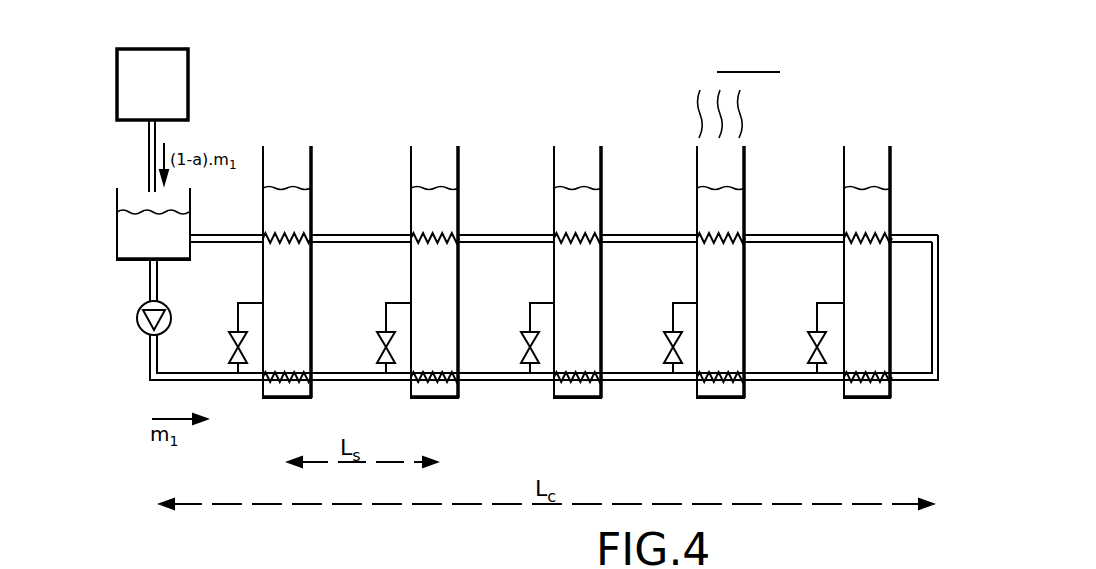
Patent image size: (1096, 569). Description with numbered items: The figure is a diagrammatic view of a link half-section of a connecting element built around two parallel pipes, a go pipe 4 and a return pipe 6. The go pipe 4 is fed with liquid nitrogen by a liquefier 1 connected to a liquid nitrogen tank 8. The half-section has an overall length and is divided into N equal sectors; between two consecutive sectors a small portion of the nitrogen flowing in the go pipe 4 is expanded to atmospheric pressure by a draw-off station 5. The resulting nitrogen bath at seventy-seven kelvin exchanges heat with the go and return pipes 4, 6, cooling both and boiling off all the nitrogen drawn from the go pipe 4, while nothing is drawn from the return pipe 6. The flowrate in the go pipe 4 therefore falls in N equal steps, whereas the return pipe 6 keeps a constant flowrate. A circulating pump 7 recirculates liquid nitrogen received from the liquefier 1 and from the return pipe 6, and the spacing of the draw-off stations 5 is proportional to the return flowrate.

The liquefier 1 is at (191, 80).
The go pipe 4 is at (205, 382).
The draw-off station 5 is at (313, 389).
The return pipe 6 is at (640, 234).
The circulating pump 7 is at (171, 312).
The liquid nitrogen tank 8 is at (117, 233).